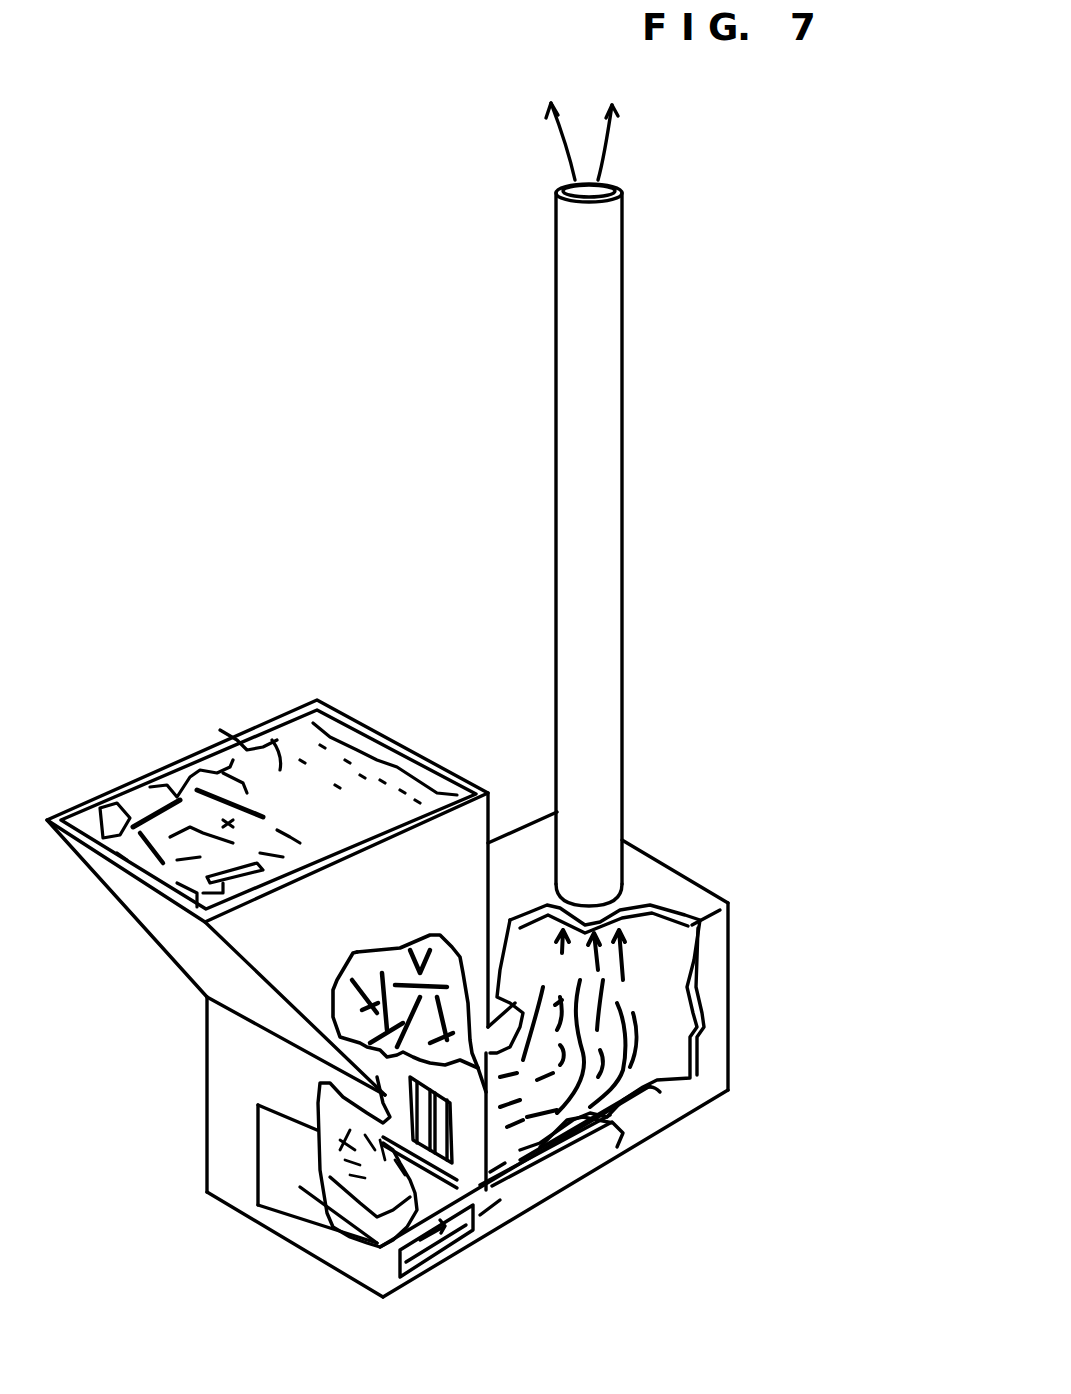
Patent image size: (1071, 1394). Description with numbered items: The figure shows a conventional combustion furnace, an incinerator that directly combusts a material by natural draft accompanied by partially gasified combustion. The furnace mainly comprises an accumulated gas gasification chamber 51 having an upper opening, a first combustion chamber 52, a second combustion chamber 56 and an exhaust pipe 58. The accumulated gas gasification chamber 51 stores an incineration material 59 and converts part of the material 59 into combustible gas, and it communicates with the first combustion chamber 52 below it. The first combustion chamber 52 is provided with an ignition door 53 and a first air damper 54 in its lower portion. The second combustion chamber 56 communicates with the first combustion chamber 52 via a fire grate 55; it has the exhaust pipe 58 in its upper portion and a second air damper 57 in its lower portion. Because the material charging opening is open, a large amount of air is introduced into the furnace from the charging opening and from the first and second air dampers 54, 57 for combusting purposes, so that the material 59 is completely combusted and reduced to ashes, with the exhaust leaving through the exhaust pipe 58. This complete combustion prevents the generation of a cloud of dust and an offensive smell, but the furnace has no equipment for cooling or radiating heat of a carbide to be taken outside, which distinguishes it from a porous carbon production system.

The accumulated gas gasification chamber 51 is at (160, 905).
The first combustion chamber 52 is at (375, 1240).
The ignition door 53 is at (300, 1195).
The first air damper 54 is at (428, 1277).
The fire grate 55 is at (470, 1190).
The second combustion chamber 56 is at (637, 1035).
The second air damper 57 is at (632, 1152).
The exhaust pipe 58 is at (602, 462).
The incineration material 59 is at (237, 735).